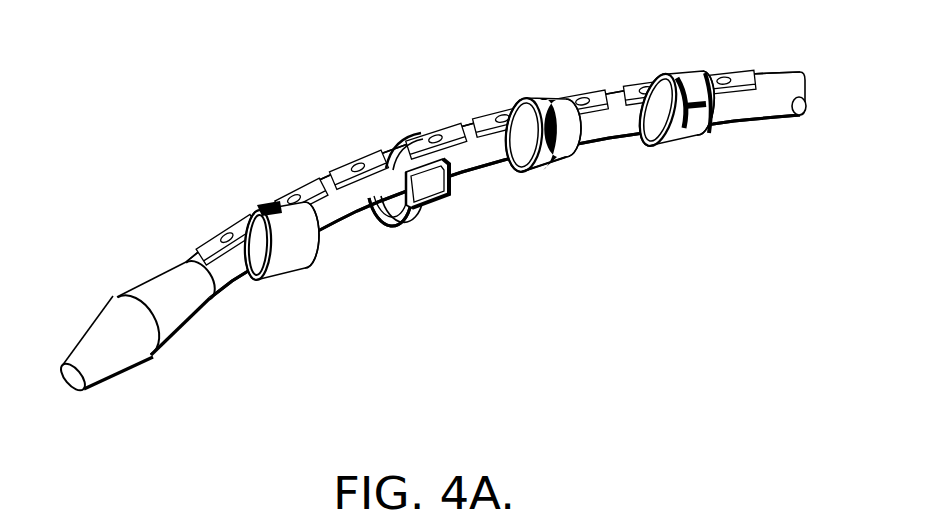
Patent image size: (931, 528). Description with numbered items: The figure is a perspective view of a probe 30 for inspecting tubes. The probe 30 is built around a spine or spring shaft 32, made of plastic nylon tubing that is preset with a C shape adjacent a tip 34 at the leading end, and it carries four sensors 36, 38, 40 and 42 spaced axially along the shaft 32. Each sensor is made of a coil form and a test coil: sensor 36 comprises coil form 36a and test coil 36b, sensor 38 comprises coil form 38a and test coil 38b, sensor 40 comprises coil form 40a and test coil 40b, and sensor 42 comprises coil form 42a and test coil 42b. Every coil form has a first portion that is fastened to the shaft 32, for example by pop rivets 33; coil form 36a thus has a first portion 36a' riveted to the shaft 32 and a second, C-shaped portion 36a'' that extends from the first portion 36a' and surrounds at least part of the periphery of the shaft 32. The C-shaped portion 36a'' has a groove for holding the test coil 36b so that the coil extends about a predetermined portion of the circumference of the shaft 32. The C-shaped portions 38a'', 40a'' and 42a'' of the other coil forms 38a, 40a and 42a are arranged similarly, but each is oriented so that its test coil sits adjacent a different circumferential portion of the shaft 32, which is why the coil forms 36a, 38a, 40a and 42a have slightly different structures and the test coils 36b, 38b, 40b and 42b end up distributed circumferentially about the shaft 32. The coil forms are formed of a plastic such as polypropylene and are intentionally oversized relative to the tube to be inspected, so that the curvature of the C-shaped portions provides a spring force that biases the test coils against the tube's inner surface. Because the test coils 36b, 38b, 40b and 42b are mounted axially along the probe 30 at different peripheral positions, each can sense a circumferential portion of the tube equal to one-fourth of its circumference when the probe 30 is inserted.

The probe 30 is at (192, 146).
The spring shaft 32 is at (786, 118).
The pop rivets 33 is at (302, 186).
The tip 34 is at (116, 386).
The sensor 36 is at (286, 310).
The coil form 36a is at (248, 289).
The first portion 36a' is at (328, 166).
The C-shaped portion 36a'' is at (332, 285).
The test coil 36b is at (260, 208).
The sensor 38 is at (408, 256).
The coil form 38a is at (383, 240).
The C-shaped portion 38a'' is at (462, 213).
The test coil 38b is at (446, 205).
The sensor 40 is at (544, 218).
The coil form 40a is at (515, 162).
The C-shaped portion 40a'' is at (571, 207).
The test coil 40b is at (580, 138).
The sensor 42 is at (673, 192).
The coil form 42a is at (651, 132).
The C-shaped portion 42a'' is at (726, 144).
The test coil 42b is at (708, 78).